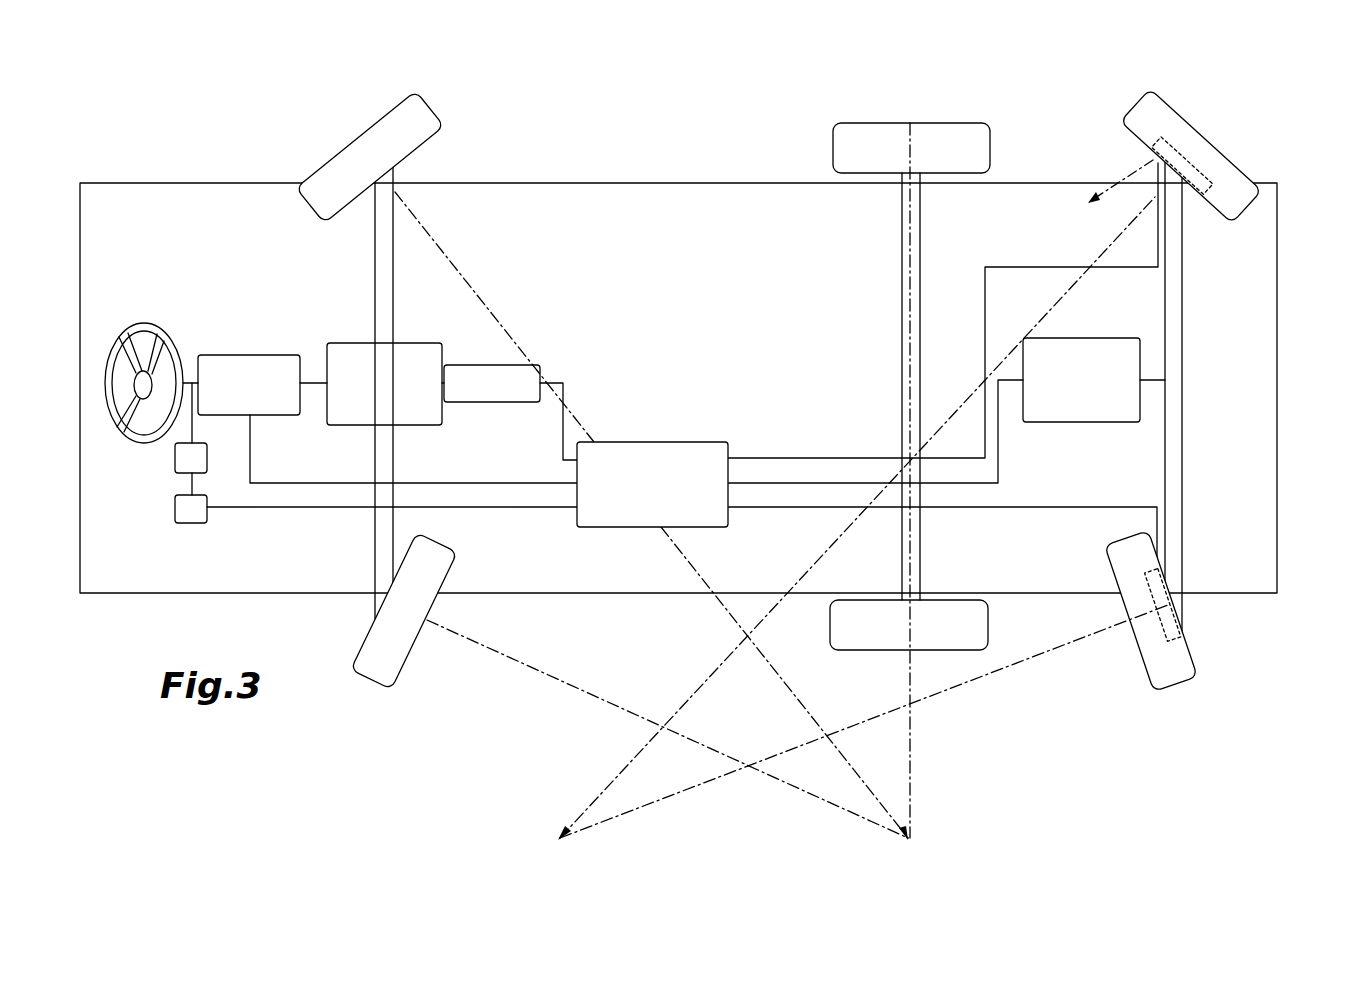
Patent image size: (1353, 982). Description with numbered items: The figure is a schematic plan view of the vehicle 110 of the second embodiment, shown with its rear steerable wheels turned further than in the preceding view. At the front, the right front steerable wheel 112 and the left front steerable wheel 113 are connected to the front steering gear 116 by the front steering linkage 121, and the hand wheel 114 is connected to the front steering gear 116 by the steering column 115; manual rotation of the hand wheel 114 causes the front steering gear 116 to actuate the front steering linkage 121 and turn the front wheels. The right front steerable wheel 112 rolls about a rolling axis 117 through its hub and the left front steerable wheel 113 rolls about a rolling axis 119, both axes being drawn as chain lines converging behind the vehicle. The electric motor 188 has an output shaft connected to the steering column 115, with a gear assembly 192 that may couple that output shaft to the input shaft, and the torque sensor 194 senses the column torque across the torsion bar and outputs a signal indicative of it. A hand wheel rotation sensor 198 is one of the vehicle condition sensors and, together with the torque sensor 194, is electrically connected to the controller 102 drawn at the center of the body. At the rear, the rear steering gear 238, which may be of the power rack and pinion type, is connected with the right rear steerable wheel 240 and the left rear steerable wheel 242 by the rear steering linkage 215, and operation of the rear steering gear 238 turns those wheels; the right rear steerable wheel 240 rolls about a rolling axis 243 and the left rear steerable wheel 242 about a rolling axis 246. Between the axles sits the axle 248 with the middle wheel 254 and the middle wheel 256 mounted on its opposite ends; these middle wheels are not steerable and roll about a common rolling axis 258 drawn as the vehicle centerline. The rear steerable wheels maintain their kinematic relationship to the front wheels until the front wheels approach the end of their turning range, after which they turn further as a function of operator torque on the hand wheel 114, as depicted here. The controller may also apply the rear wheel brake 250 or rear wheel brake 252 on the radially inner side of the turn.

The vehicle 110 is at (1304, 110).
The right front steerable wheel 112 is at (387, 118).
The left front steerable wheel 113 is at (367, 665).
The hand wheel 114 is at (148, 328).
The steering column 115 is at (312, 357).
The front steering gear 116 is at (445, 362).
The rolling axis 117 is at (468, 283).
The rolling axis 119 is at (597, 702).
The front steering linkage 121 is at (383, 466).
The controller 102 is at (648, 460).
The electric motor 188 is at (172, 515).
The gear assembly 192 is at (172, 463).
The torque sensor 194 is at (250, 353).
The hand wheel rotation sensor 198 is at (523, 365).
The rear steering linkage 215 is at (1173, 305).
The rear steering gear 238 is at (1080, 337).
The right rear steerable wheel 240 is at (1163, 132).
The left rear steerable wheel 242 is at (1158, 658).
The rolling axis 243 is at (707, 677).
The rolling axis 246 is at (1038, 653).
The axle 248 is at (900, 330).
The rear wheel brake 250 is at (1111, 194).
The rear wheel brake 252 is at (1168, 598).
The middle wheel 254 is at (858, 142).
The middle wheel 256 is at (865, 632).
The common rolling axis 258 is at (910, 768).